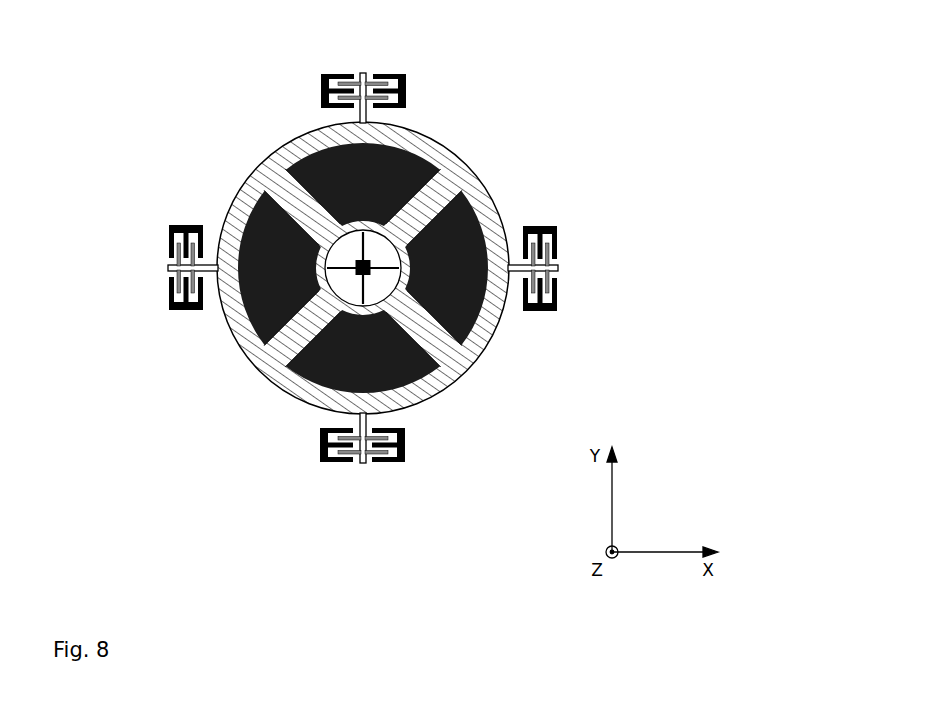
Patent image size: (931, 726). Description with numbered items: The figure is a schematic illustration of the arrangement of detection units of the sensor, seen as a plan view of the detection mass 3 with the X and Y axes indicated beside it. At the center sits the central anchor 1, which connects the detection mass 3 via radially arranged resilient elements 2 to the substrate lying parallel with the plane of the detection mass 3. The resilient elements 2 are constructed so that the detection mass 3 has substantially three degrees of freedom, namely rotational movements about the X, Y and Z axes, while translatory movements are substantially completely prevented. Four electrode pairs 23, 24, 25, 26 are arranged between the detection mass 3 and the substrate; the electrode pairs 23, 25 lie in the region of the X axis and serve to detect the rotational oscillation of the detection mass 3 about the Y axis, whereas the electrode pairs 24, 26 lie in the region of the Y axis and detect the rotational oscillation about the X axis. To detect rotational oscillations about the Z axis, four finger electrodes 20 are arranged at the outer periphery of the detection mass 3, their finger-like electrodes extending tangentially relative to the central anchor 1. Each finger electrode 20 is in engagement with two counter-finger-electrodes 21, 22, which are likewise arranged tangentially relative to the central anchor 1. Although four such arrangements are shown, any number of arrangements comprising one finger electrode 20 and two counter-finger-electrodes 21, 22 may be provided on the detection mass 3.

The central anchor 1 is at (357, 263).
The resilient elements 2 is at (377, 265).
The detection mass 3 is at (232, 207).
The finger electrodes 20 is at (365, 75).
The counter-finger-electrode 21 is at (407, 79).
The counter-finger-electrode 22 is at (321, 79).
The electrode pair 23 is at (472, 203).
The electrode pair 24 is at (292, 164).
The electrode pair 25 is at (255, 340).
The electrode pair 26 is at (442, 382).